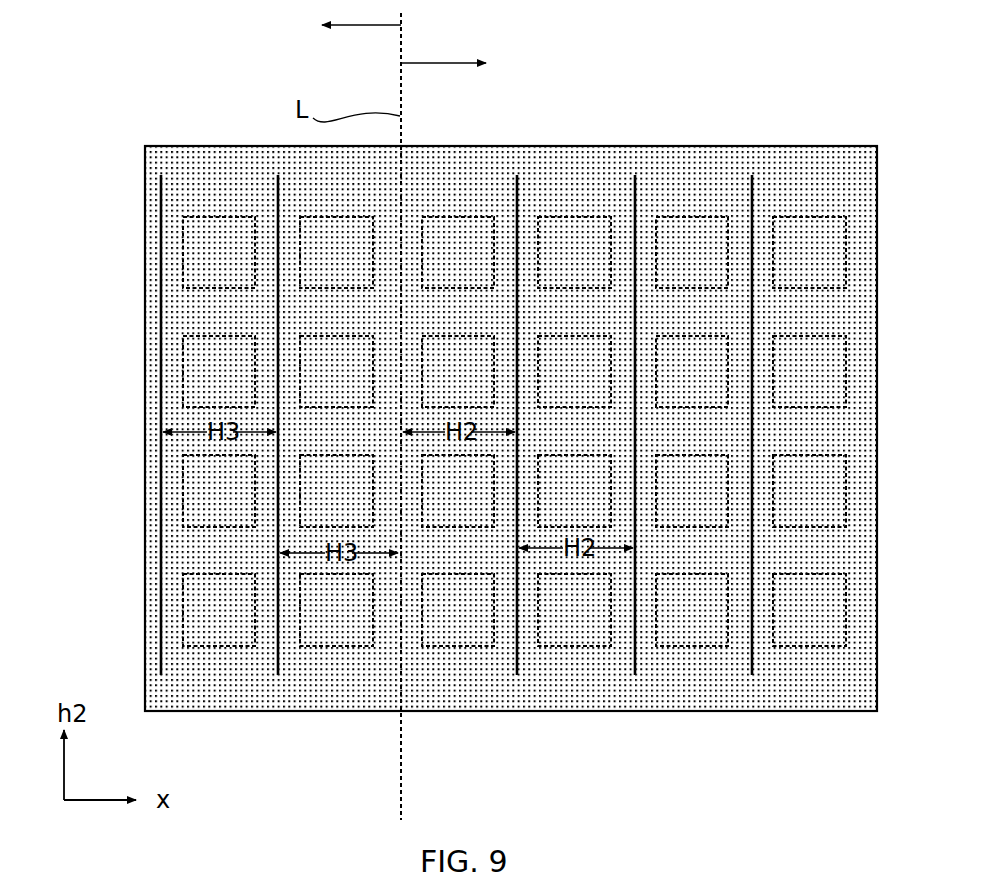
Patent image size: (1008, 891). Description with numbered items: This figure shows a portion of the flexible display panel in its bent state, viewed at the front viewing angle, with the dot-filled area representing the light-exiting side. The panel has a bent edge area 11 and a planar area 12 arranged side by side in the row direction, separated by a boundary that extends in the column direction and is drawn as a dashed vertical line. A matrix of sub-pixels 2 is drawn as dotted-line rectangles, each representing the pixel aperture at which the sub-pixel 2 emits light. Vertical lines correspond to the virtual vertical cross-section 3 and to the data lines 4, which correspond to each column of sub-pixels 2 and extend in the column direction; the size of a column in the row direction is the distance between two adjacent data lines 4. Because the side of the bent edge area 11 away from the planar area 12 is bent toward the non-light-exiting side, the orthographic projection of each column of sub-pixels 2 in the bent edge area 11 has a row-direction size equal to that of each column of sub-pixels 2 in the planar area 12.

The sub-pixel 2 is at (183, 234).
The virtual vertical cross-section 3 is at (635, 190).
The data line 4 is at (161, 176).
The bent edge area 11 is at (340, 25).
The planar area 12 is at (466, 64).